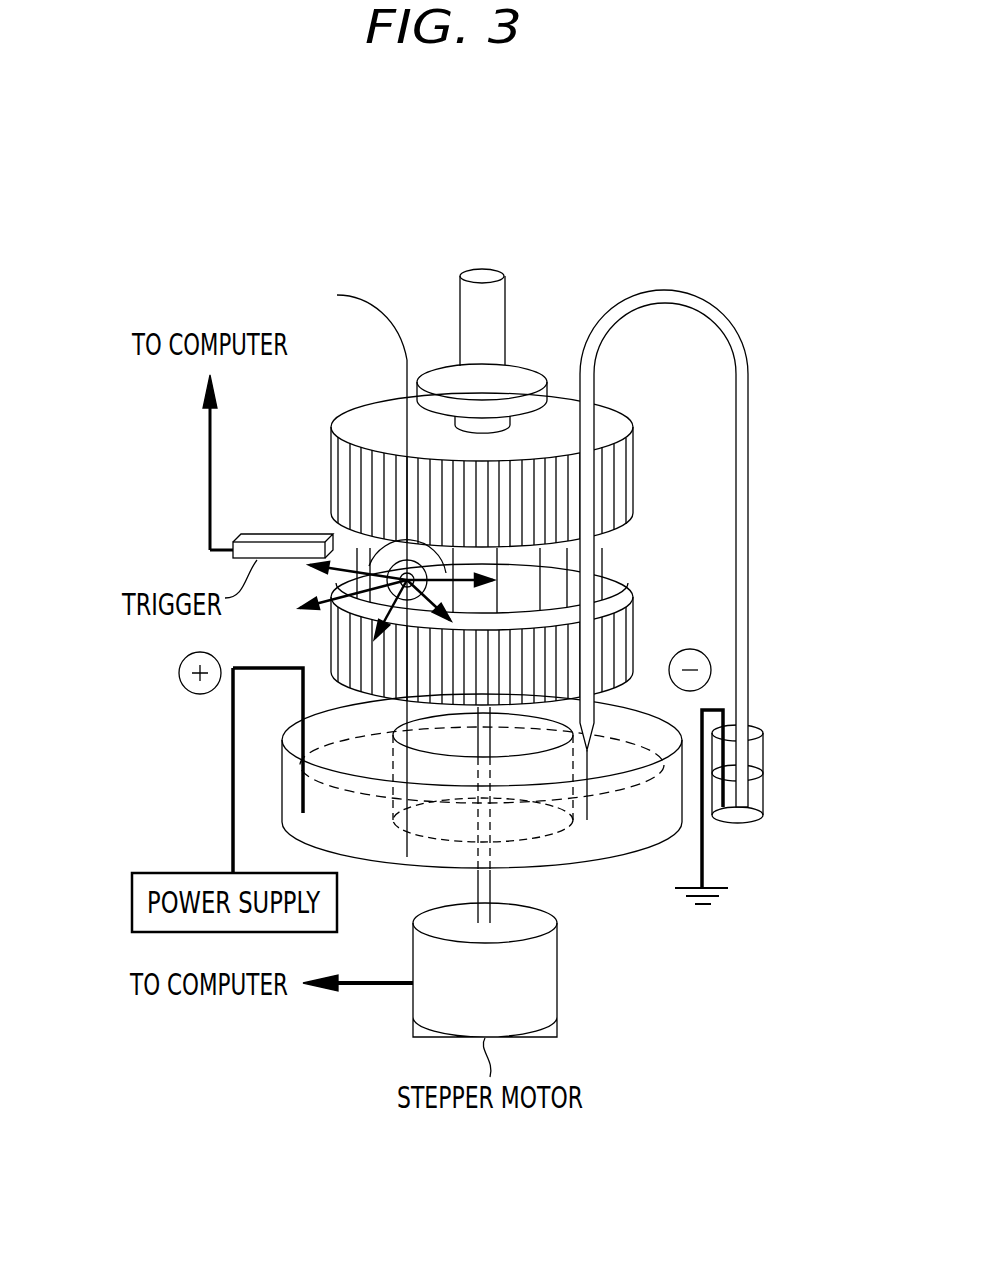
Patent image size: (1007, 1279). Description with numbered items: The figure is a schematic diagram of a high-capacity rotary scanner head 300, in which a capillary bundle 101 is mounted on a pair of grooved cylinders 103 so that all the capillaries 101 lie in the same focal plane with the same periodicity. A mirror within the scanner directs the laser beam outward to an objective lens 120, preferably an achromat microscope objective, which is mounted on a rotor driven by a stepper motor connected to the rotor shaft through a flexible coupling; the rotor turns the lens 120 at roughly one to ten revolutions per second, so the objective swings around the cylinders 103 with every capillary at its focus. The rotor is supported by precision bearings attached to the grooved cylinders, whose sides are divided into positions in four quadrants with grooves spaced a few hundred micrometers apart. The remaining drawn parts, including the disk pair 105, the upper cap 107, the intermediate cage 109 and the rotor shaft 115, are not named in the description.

The capillaries 101 is at (733, 310).
The grooved disks 103 is at (553, 490).
The electrode disc 105 is at (331, 478).
The cap 107 is at (427, 380).
The spacer cage 109 is at (607, 552).
The shaft 115 is at (472, 277).
The objective lens 120 is at (630, 590).
The apparatus 300 is at (100, 692).